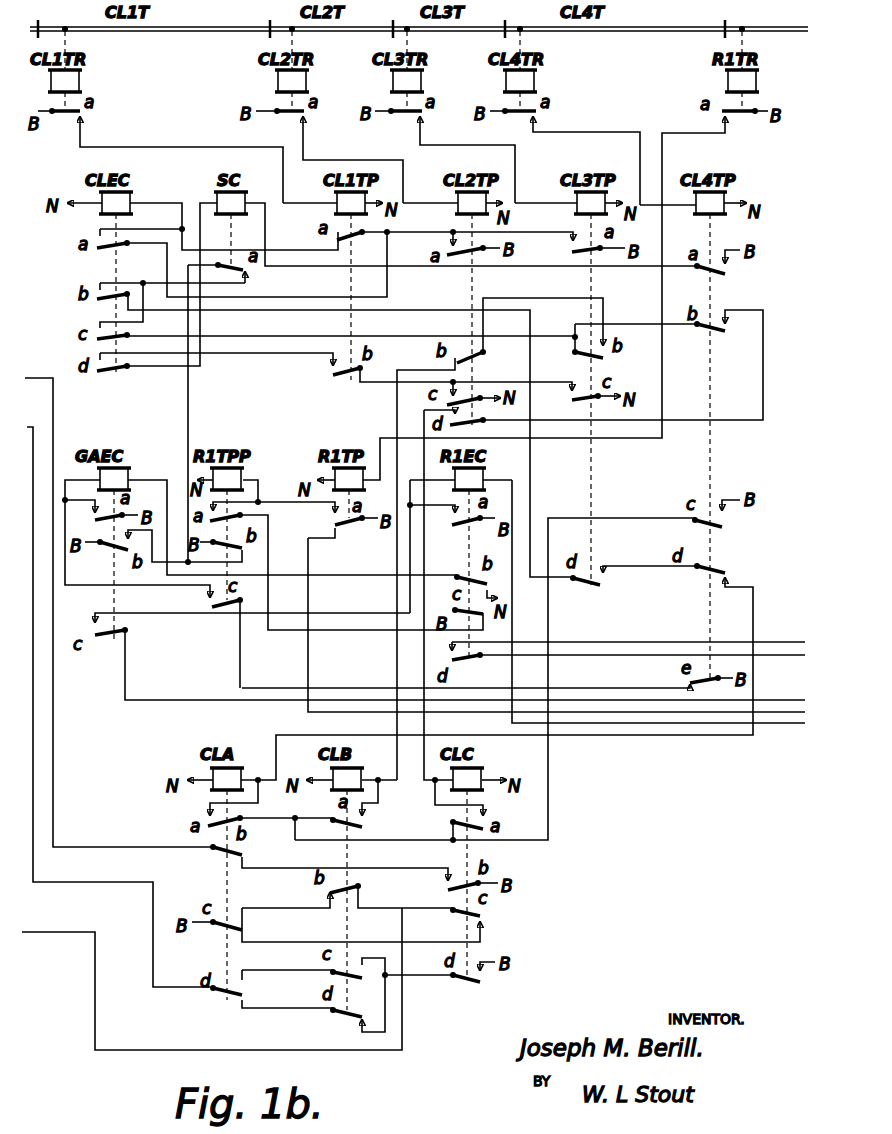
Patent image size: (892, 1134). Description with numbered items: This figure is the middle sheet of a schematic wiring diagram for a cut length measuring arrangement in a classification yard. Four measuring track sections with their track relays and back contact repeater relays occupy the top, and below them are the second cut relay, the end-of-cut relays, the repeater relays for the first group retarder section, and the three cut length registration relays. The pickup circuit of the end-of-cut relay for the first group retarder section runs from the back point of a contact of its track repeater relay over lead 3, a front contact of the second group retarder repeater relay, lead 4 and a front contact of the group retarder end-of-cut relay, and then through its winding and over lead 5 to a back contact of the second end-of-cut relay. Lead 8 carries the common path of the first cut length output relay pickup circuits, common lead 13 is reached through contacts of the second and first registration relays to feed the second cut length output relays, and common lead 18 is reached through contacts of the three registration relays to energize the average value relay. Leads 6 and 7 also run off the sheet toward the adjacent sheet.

The lead 3 is at (310, 560).
The lead 4 is at (778, 705).
The lead 5 is at (512, 607).
The wire 6 is at (772, 645).
The wire 7 is at (782, 657).
The lead 8 is at (48, 378).
The common lead 13 is at (33, 427).
The common lead 18 is at (72, 932).